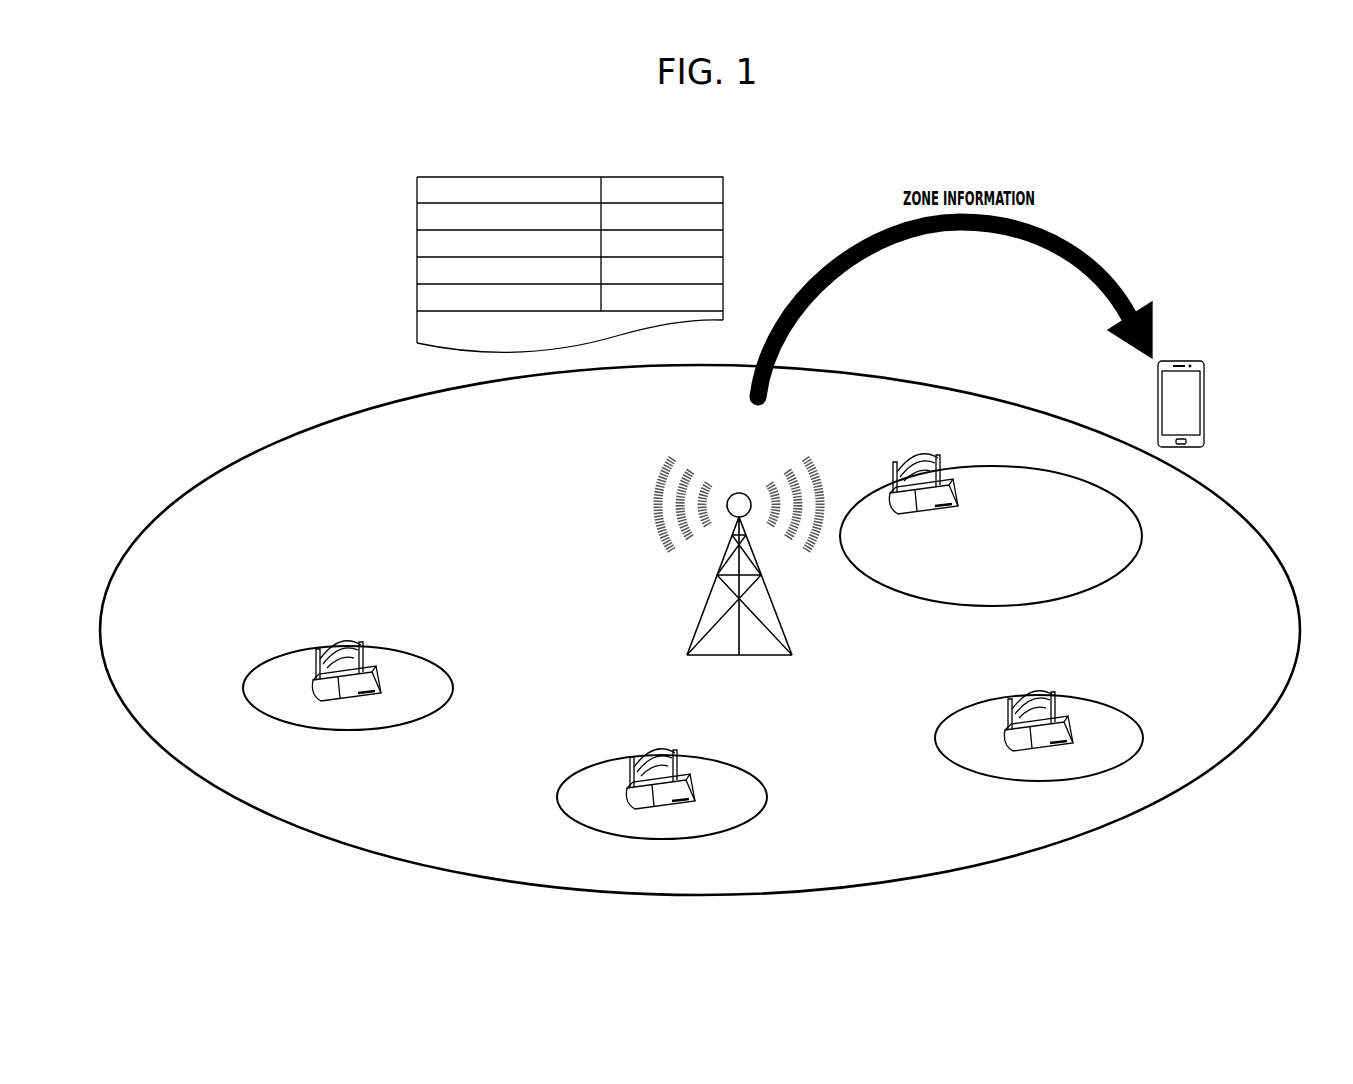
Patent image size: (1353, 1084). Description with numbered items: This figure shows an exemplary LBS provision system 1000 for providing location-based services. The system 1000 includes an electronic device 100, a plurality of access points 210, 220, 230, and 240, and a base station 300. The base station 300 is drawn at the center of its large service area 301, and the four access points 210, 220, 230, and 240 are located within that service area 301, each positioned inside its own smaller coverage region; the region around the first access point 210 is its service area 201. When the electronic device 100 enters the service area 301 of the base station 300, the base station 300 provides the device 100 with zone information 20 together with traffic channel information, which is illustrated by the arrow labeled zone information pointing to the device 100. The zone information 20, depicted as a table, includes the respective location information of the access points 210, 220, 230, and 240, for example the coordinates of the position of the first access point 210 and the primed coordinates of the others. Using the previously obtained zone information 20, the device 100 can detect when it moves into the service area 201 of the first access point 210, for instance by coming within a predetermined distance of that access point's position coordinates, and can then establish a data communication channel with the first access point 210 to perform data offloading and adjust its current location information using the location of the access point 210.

The zone information 20 is at (704, 175).
The LBS provision system 1000 is at (1152, 179).
The electronic device 100 is at (1197, 359).
The first access point 210 is at (940, 452).
The access point 220 is at (1066, 725).
The access point 230 is at (689, 785).
The access point 240 is at (369, 675).
The service area of the first access point 201 is at (1137, 523).
The base station 300 is at (703, 613).
The service area of the base station 301 is at (1225, 758).